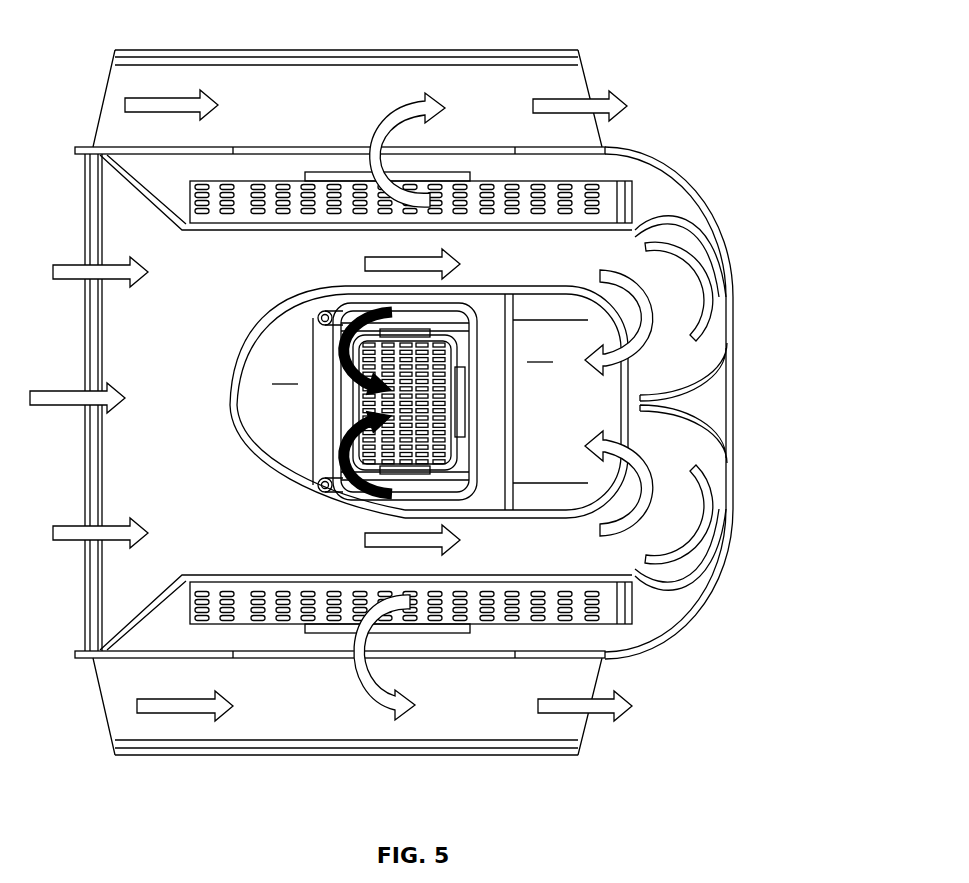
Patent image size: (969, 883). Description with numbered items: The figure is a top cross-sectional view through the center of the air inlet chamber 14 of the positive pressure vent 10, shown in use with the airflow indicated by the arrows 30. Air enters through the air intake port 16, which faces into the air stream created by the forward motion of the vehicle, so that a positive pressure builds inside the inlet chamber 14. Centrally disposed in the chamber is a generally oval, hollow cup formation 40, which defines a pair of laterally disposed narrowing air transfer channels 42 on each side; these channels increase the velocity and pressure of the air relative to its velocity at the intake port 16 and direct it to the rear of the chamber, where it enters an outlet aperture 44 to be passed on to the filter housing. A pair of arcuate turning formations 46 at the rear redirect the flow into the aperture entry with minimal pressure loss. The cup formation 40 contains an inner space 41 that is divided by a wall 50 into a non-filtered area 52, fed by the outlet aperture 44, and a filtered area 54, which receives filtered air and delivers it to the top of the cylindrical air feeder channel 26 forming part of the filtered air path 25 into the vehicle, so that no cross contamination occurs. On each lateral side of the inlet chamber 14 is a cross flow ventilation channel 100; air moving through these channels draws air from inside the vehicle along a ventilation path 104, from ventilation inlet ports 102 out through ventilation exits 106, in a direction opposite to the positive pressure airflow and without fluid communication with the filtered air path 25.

The positive pressure vent 10 is at (733, 277).
The air inlet chamber 14 is at (132, 228).
The air intake port 16 is at (85, 348).
The filtered air path 25 is at (318, 338).
The cylindrical air feeder channel 26 is at (392, 310).
The airflow 30 is at (127, 105).
The cup formation 40 is at (230, 412).
The inner space 41 is at (443, 402).
The air transfer channels 42 is at (580, 255).
The outlet aperture 44 is at (720, 351).
The arcuate turning formations 46 is at (711, 303).
The wall 50 is at (531, 377).
The non-filtered area 52 is at (550, 401).
The filtered area 54 is at (374, 401).
The cross flow ventilation channels 100 is at (598, 62).
The ventilation inlet ports 102 is at (577, 197).
The ventilation path 104 is at (432, 102).
The ventilation exits 106 is at (293, 147).